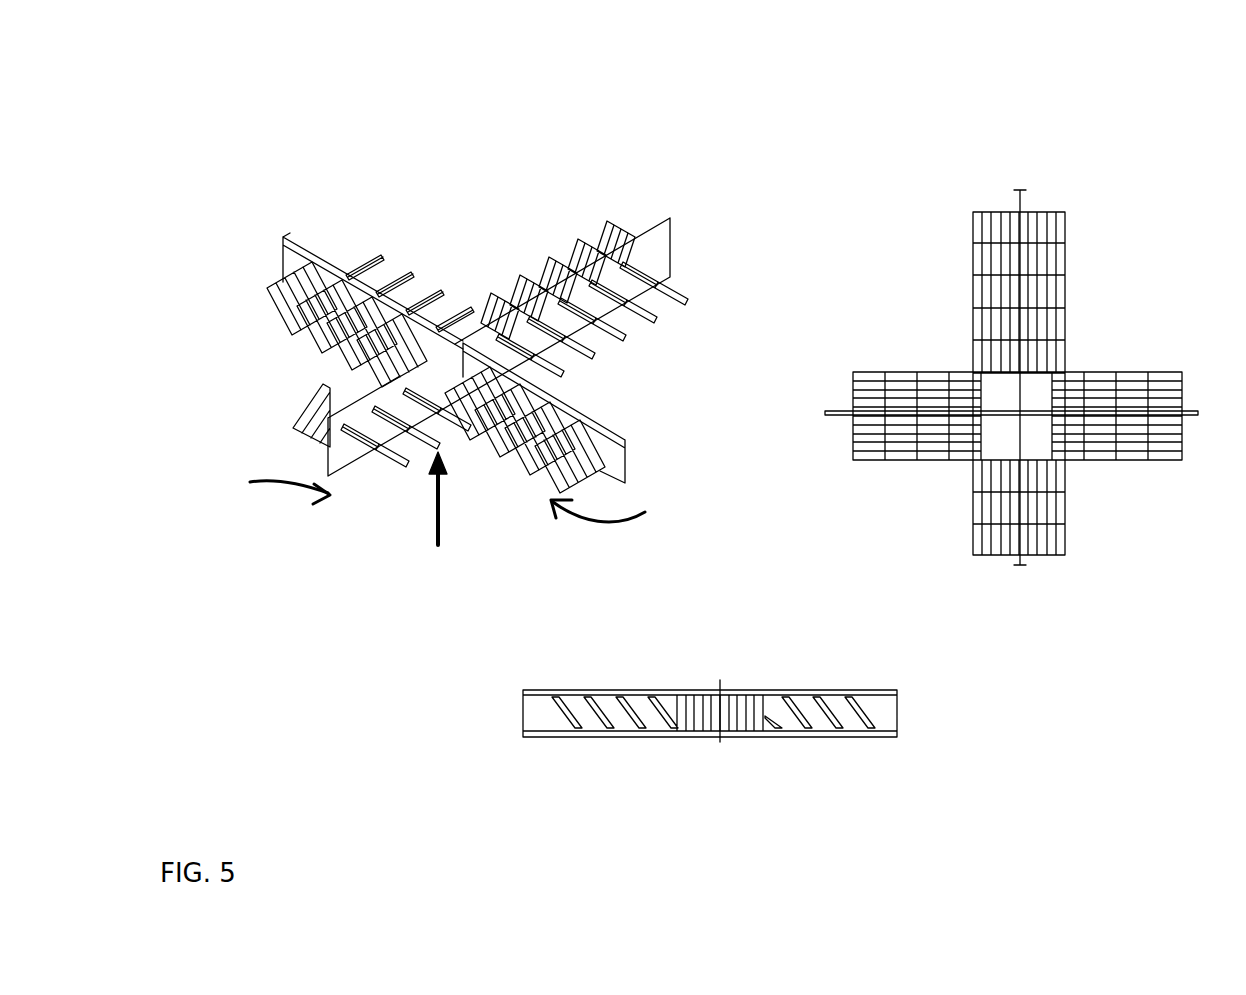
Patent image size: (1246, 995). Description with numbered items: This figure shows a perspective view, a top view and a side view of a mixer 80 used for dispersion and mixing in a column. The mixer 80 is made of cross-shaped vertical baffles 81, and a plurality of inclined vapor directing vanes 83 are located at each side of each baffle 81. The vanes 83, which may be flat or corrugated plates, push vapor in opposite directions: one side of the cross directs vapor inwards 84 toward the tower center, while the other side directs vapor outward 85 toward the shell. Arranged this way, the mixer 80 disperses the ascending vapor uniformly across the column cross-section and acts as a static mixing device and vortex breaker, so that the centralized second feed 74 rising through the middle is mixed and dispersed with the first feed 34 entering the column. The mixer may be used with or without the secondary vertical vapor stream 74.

The mixer 80 is at (921, 211).
The vertical baffle 81 is at (288, 236).
The vapor directing vane 83 is at (325, 422).
The inward vane side 84 is at (492, 437).
The outward vane side 85 is at (553, 262).
The second feed 74 is at (438, 542).
The first feed 34 is at (253, 484).